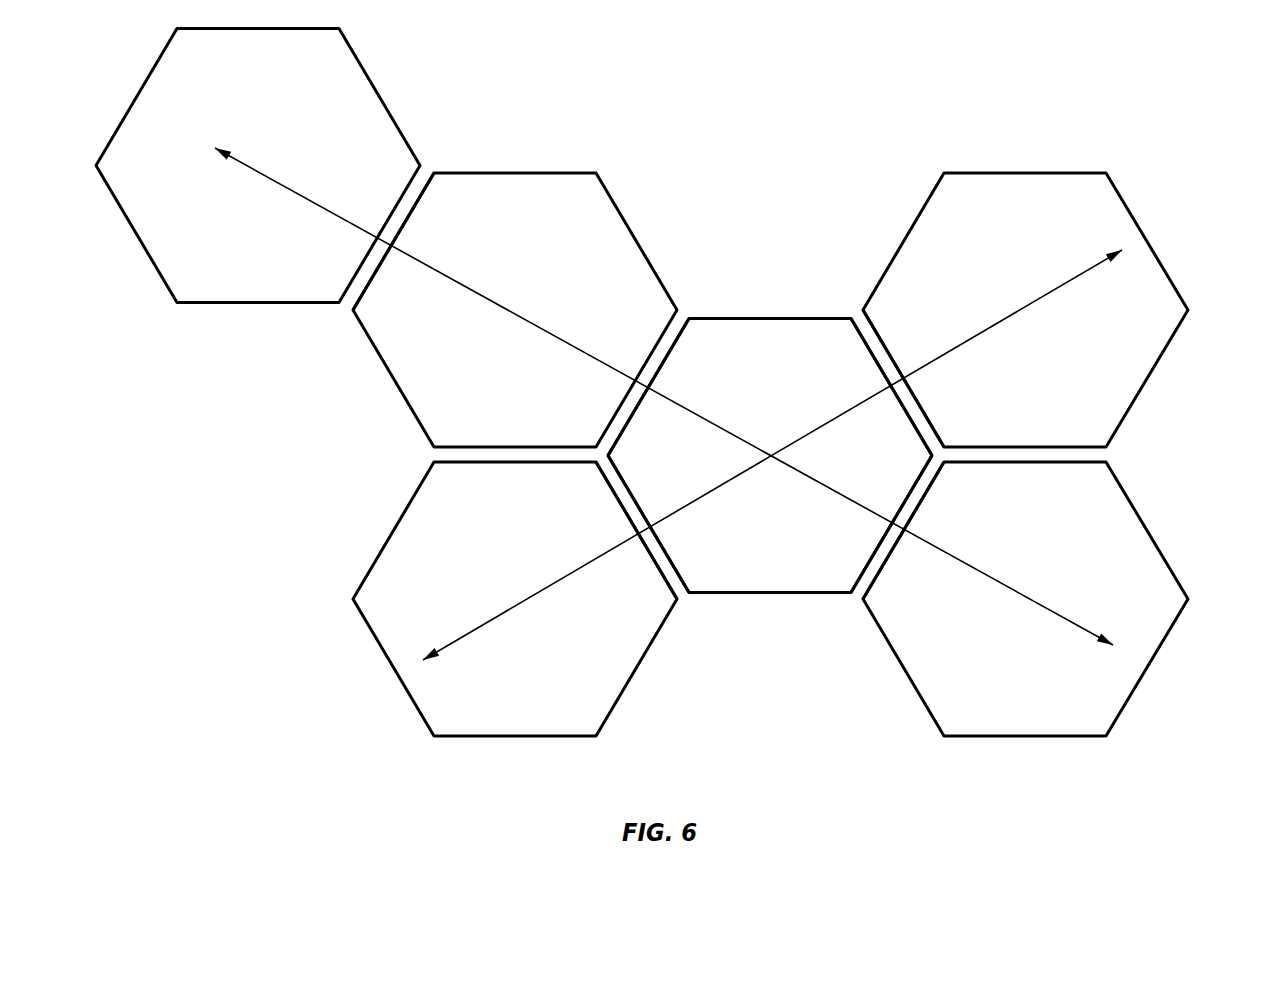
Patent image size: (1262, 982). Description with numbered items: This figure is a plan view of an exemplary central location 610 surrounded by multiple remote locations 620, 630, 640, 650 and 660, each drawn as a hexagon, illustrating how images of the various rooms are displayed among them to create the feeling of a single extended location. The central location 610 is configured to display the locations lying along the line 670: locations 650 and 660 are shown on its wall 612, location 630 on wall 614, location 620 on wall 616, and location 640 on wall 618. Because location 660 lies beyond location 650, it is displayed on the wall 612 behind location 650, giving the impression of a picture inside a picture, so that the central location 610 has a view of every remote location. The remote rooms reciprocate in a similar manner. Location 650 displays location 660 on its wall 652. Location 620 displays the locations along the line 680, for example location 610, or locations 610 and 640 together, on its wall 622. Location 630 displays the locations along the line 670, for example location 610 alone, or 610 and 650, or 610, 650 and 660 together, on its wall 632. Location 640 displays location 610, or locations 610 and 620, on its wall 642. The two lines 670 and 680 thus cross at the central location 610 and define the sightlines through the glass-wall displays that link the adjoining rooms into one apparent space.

The central location 610 is at (793, 318).
The wall 612 is at (681, 322).
The wall 614 is at (874, 553).
The wall 616 is at (868, 337).
The wall 618 is at (668, 555).
The remote location 620 is at (1123, 200).
The wall 622 is at (924, 413).
The remote location 630 is at (1157, 654).
The wall 632 is at (924, 496).
The remote location 640 is at (367, 626).
The wall 642 is at (616, 497).
The remote location 650 is at (604, 185).
The wall 652 is at (363, 293).
The remote location 660 is at (371, 77).
The line 670 is at (1022, 593).
The line 680 is at (1050, 289).